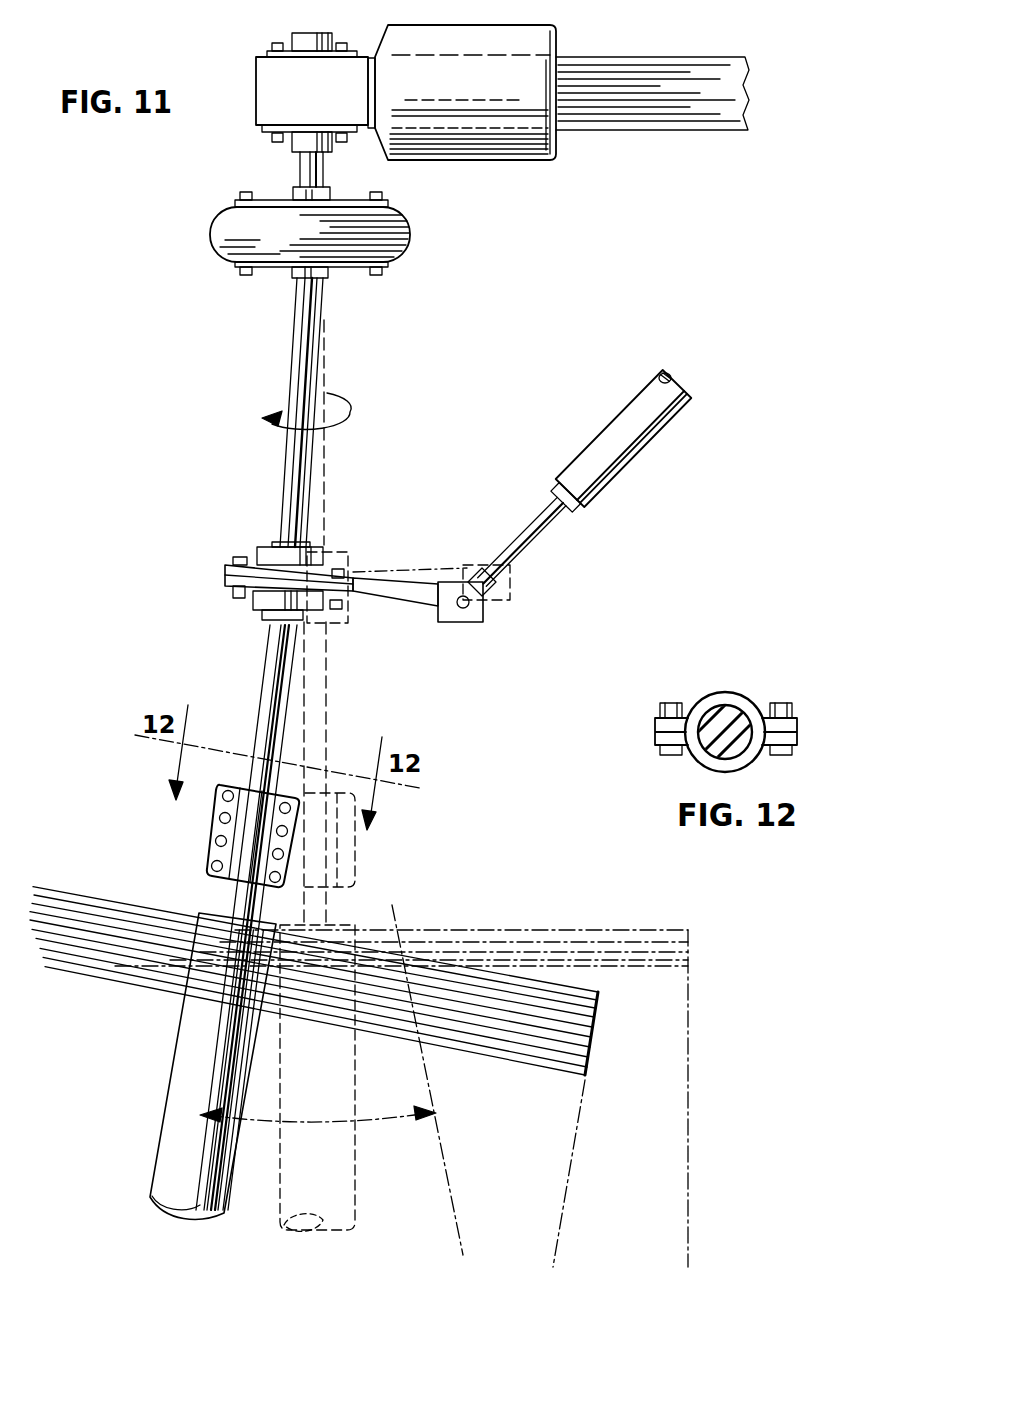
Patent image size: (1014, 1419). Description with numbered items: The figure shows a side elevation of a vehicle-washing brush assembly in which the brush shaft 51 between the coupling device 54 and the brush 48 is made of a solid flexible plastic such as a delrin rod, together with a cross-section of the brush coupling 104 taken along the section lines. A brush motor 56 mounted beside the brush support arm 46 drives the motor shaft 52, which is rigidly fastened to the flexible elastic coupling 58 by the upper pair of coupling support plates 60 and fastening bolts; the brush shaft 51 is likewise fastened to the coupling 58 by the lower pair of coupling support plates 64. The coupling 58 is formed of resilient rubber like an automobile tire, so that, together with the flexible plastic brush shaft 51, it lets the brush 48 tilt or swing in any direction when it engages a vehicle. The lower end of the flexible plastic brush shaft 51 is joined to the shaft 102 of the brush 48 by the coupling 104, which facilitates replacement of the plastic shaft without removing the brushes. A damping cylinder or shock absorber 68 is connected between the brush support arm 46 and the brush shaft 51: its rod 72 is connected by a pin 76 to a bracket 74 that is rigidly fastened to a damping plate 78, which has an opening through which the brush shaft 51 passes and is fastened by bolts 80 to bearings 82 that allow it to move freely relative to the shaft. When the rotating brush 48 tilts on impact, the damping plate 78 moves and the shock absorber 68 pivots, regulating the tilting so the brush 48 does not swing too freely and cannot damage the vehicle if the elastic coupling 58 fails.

In FIG. 11, the brush support arm 46 is at (617, 70).
In FIG. 11, the brush 48 is at (470, 973).
In FIG. 11, the drive shaft 51 is at (297, 355).
In FIG. 12, the drive shaft 51 is at (728, 712).
In FIG. 11, the motor shaft 52 is at (308, 173).
In FIG. 11, the coupling device 54 is at (306, 246).
In FIG. 11, the brush motor 56 is at (475, 35).
In FIG. 11, the flexible elastic coupling 58 is at (408, 232).
In FIG. 11, the upper pair of coupling support plates 60 is at (388, 202).
In FIG. 11, the lower pair of coupling support plates 64 is at (387, 267).
In FIG. 11, the damping cylinder or shock absorber 68 is at (648, 435).
In FIG. 11, the rod 72 is at (537, 545).
In FIG. 11, the bracket 74 is at (462, 620).
In FIG. 11, the pin 76 is at (467, 600).
In FIG. 11, the damping plate 78 is at (388, 598).
In FIG. 11, the bolts 80 is at (275, 577).
In FIG. 11, the bearings 82 is at (258, 610).
In FIG. 11, the shaft of the brush 102 is at (233, 895).
In FIG. 11, the coupling 104 is at (215, 837).
In FIG. 12, the coupling 104 is at (743, 698).